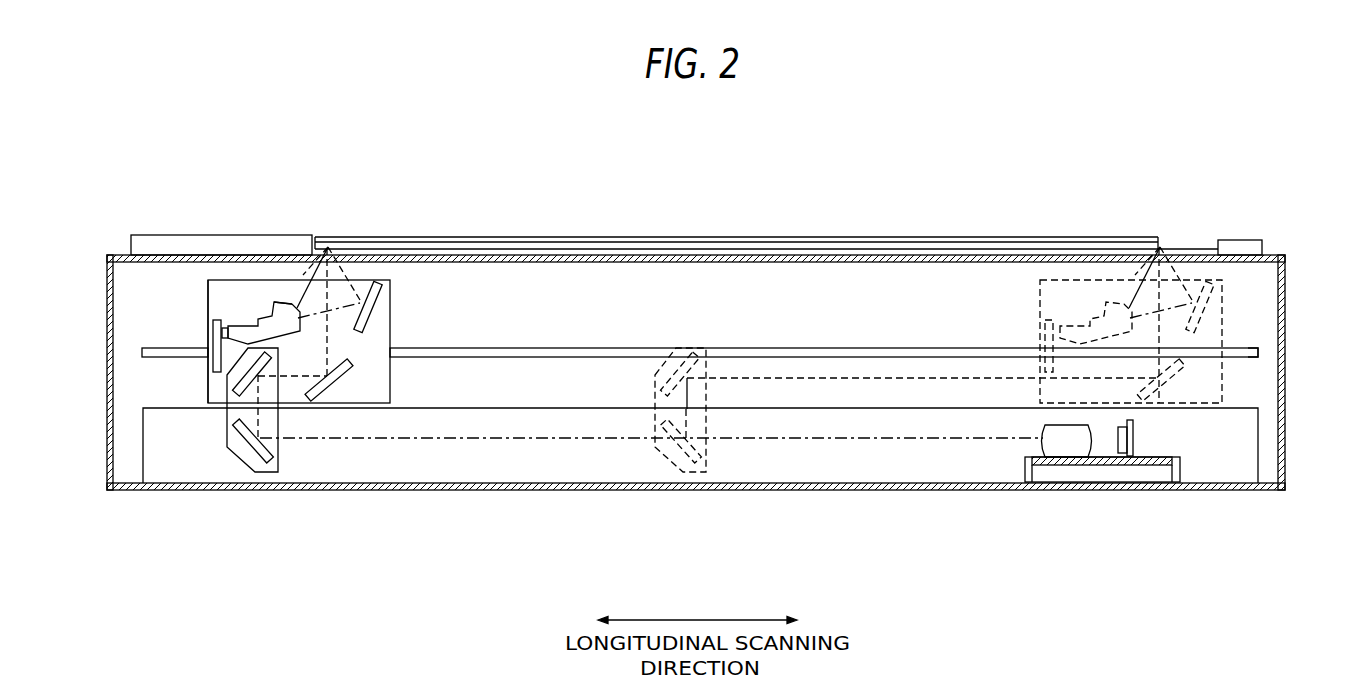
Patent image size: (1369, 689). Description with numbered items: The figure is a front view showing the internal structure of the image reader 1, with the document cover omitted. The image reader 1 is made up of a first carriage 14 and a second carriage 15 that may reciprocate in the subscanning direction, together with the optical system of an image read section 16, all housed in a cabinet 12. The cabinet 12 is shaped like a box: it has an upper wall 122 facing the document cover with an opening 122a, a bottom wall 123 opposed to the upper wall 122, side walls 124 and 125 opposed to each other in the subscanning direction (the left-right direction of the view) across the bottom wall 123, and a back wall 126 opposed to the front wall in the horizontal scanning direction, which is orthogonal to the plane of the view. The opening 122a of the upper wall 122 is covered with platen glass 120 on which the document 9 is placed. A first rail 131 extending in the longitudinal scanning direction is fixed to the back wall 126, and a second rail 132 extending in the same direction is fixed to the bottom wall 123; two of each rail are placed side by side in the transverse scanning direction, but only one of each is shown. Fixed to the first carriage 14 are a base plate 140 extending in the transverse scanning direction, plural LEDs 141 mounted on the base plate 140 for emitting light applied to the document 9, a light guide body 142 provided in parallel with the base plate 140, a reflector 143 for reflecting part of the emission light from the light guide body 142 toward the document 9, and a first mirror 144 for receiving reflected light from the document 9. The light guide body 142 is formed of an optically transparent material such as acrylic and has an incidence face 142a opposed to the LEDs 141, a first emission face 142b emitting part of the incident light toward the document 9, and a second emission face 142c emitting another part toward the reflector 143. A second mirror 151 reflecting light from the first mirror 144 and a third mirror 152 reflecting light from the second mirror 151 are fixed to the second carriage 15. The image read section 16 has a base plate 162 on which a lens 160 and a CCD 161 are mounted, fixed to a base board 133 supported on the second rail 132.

The image reader 1 is at (699, 328).
The document 9 is at (647, 237).
The cabinet 12 is at (1293, 285).
The first carriage 14 is at (248, 317).
The second carriage 15 is at (170, 458).
The image read section 16 is at (1061, 526).
The platen glass 120 is at (1180, 280).
The upper wall 122 is at (1270, 257).
The opening 122a is at (1160, 250).
The bottom wall 123 is at (545, 490).
The side wall 124 is at (110, 423).
The side wall 125 is at (1283, 340).
The back wall 126 is at (778, 283).
The first rail 131 is at (1250, 353).
The second rail 132 is at (1250, 455).
The base board 133 is at (1176, 466).
The base plate 140 is at (212, 330).
The LEDs 141 is at (219, 321).
The light guide body 142 is at (258, 326).
The incidence face 142a is at (222, 333).
The first emission face 142b is at (285, 304).
The second emission face 142c is at (300, 309).
The reflector 143 is at (377, 286).
The first mirror 144 is at (335, 388).
The second mirror 151 is at (240, 386).
The third mirror 152 is at (256, 455).
The lens 160 is at (1043, 437).
The CCD 161 is at (1125, 448).
The base plate 162 is at (1134, 428).